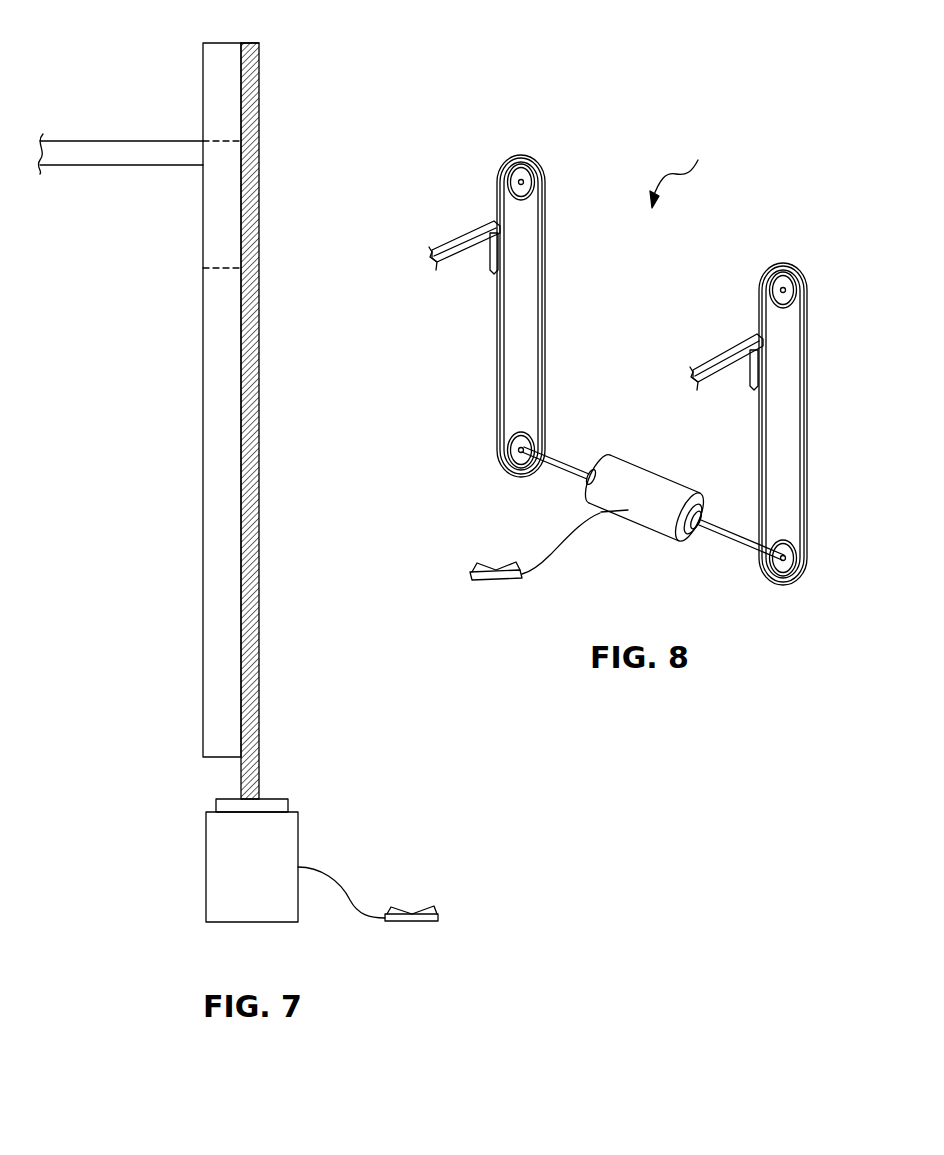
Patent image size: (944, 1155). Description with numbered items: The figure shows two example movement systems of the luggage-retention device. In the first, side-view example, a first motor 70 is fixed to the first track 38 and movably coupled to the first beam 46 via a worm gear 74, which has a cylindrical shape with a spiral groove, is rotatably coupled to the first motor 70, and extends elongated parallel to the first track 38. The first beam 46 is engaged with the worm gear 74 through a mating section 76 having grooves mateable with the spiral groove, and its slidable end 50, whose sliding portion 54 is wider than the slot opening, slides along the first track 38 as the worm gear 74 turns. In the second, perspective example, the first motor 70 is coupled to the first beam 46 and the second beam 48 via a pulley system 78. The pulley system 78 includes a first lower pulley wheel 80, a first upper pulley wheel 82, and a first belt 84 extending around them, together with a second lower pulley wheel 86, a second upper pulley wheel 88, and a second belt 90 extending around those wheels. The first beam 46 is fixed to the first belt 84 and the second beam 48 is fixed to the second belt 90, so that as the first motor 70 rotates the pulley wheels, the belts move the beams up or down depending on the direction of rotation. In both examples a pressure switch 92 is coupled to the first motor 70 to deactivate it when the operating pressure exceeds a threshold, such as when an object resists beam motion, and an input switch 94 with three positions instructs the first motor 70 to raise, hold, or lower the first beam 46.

In FIG. 7, the first track 38 is at (203, 380).
In FIG. 7, the first beam 46 is at (100, 141).
In FIG. 8, the first beam 46 is at (472, 241).
In FIG. 8, the second beam 48 is at (728, 347).
In FIG. 7, the slidable end 50 is at (192, 140).
In FIG. 7, the sliding portion 54 is at (222, 268).
In FIG. 7, the first motor 70 is at (298, 835).
In FIG. 8, the first motor 70 is at (637, 465).
In FIG. 7, the worm gear 74 is at (260, 392).
In FIG. 7, the mating section 76 is at (241, 62).
In FIG. 8, the pulley system 78 is at (683, 172).
In FIG. 8, the first lower pulley wheel 80 is at (512, 452).
In FIG. 8, the first upper pulley wheel 82 is at (526, 180).
In FIG. 8, the first belt 84 is at (547, 303).
In FIG. 8, the second lower pulley wheel 86 is at (786, 568).
In FIG. 8, the second upper pulley wheel 88 is at (788, 287).
In FIG. 8, the second belt 90 is at (807, 451).
In FIG. 7, the pressure switch 92 is at (275, 799).
In FIG. 8, the pressure switch 92 is at (572, 478).
In FIG. 7, the input switch 94 is at (418, 921).
In FIG. 8, the input switch 94 is at (492, 580).